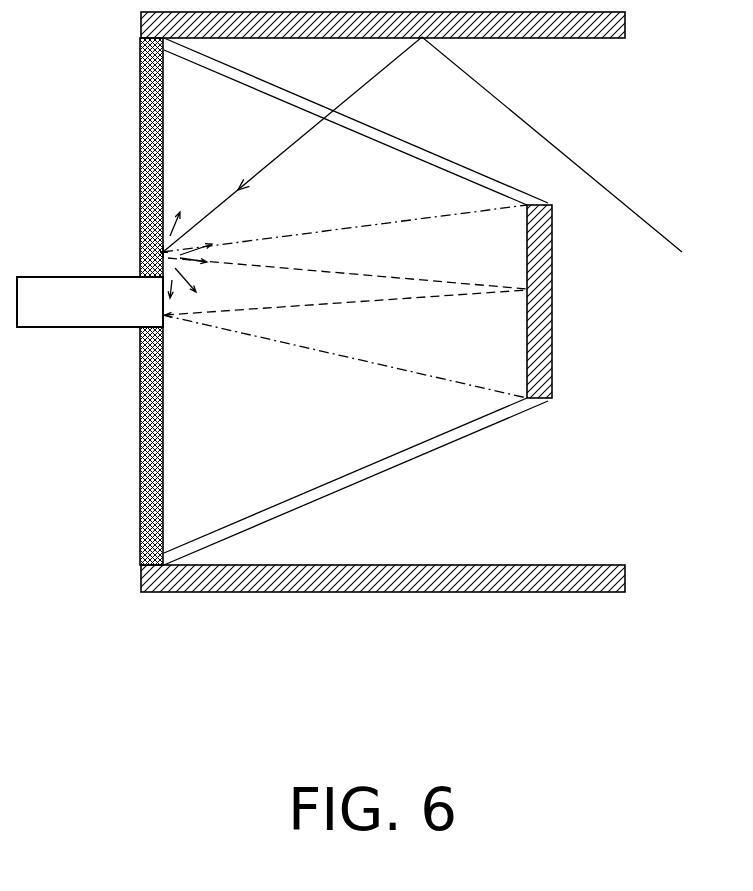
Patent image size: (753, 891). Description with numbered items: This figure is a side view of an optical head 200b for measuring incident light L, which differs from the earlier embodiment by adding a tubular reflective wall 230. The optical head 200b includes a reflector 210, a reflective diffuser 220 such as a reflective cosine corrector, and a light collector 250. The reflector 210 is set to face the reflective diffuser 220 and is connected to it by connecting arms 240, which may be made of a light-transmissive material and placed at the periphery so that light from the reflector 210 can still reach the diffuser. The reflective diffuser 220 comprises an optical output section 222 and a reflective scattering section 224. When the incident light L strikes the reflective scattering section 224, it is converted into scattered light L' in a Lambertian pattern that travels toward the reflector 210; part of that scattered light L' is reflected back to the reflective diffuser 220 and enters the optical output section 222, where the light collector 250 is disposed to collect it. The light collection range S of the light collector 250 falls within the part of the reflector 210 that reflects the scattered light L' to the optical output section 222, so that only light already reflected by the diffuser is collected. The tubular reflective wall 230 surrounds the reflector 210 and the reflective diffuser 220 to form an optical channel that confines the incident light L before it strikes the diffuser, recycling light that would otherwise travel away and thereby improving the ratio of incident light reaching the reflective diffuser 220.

The optical head 200b is at (652, 729).
The reflector 210 is at (553, 340).
The reflective diffuser 220 is at (118, 301).
The optical output section 222 is at (140, 293).
The reflective scattering section 224 is at (138, 493).
The tubular reflective wall 230 is at (305, 592).
The connecting arms 240 is at (327, 497).
The light collector 250 is at (67, 327).
The incident light L is at (422, 144).
The scattered light L' is at (346, 284).
The light collection range S is at (345, 301).